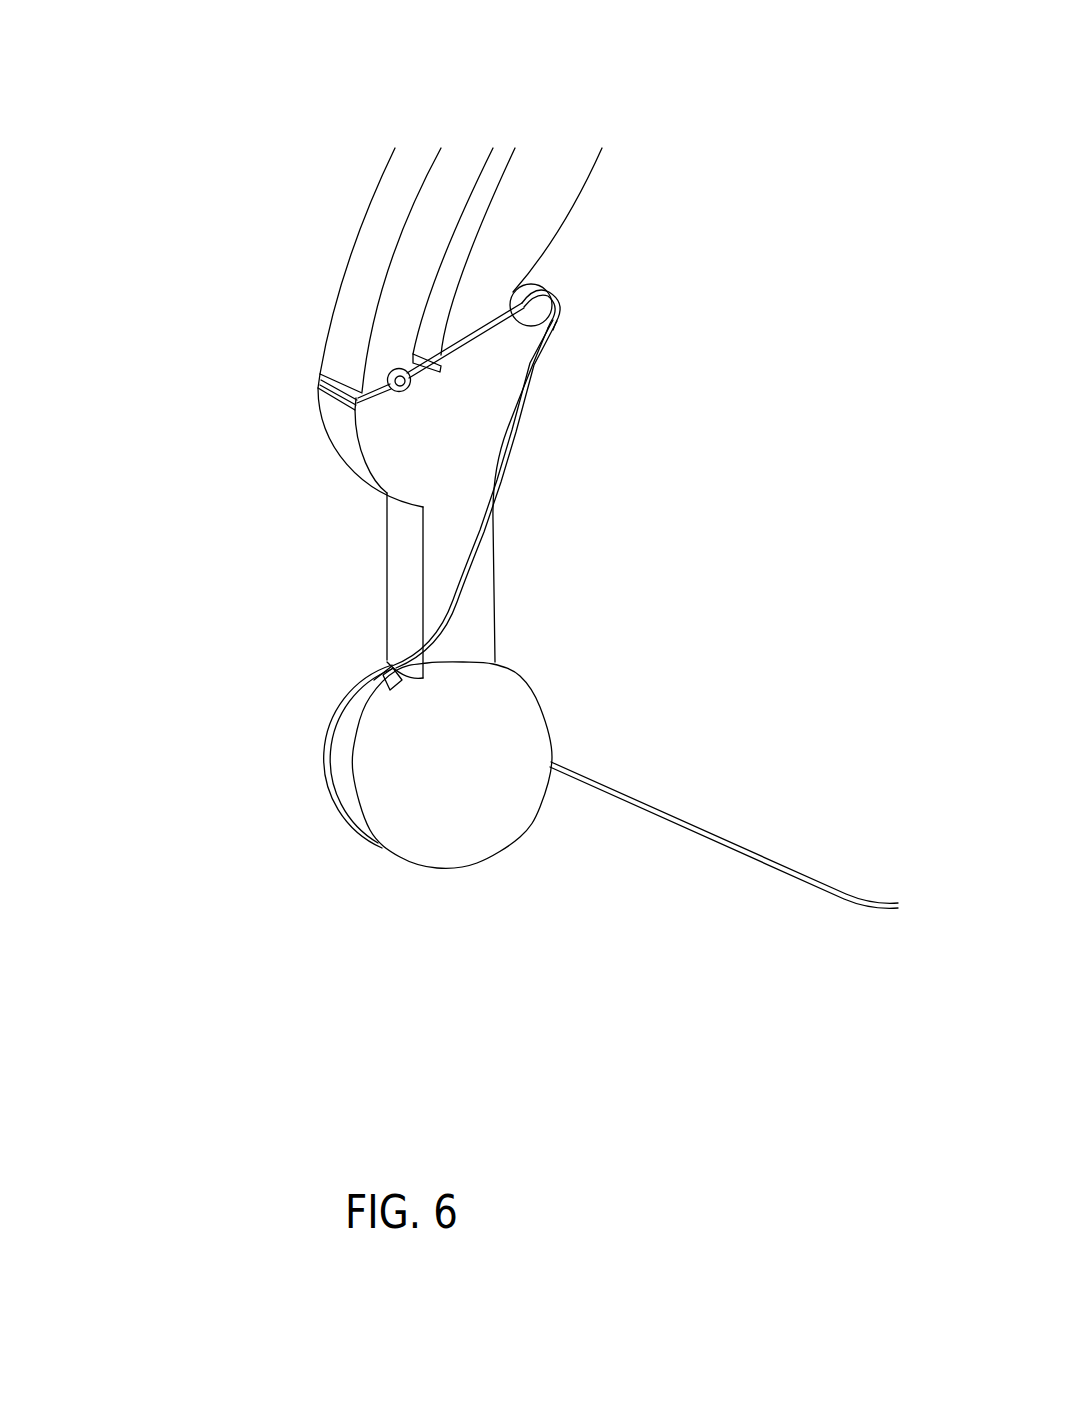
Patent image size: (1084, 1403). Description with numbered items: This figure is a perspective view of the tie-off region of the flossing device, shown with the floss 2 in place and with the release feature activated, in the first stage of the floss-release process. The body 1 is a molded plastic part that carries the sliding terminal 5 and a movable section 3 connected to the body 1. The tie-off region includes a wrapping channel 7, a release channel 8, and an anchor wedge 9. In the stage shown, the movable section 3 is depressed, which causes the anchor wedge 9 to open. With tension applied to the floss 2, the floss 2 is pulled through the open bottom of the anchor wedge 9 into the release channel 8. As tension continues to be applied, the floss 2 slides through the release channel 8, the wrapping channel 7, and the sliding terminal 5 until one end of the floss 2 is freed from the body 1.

The body 1 is at (585, 183).
The floss 2 is at (530, 397).
The movable section 3 is at (350, 241).
The sliding terminal 5 is at (518, 830).
The wrapping channel 7 is at (573, 250).
The release channel 8 is at (393, 390).
The anchor wedge 9 is at (315, 402).